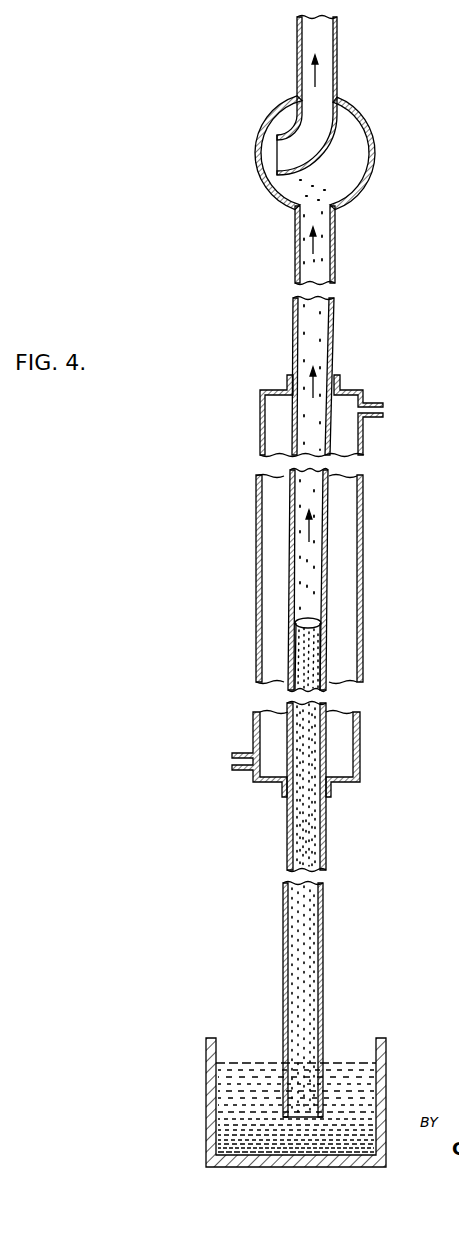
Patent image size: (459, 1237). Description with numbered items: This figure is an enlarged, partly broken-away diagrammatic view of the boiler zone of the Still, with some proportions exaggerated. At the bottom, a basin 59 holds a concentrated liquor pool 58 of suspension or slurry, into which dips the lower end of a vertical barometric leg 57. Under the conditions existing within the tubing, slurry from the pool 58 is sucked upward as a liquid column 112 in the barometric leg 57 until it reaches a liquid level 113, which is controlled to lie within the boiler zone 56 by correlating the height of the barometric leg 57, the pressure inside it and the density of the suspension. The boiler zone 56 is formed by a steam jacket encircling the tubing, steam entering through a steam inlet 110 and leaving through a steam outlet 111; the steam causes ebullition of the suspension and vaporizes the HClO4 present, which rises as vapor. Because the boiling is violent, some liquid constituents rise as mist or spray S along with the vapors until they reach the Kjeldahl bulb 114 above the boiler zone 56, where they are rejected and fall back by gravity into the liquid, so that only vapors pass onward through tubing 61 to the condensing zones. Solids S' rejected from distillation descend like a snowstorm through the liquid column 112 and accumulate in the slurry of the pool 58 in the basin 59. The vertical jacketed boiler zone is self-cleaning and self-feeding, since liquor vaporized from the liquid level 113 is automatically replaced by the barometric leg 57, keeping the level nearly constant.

The tubing section 61 is at (297, 54).
The Kjeldahl bulb 114 is at (375, 160).
The mist or spray S is at (292, 245).
The steam inlet 110 is at (383, 410).
The boiler zone 56 is at (363, 492).
The liquid level 113 is at (310, 623).
The steam outlet 111 is at (240, 752).
The liquid column 112 is at (305, 812).
The barometric leg 57 is at (326, 835).
The solids S' is at (270, 840).
The concentrated liquor pool 58 is at (257, 1063).
The basin 59 is at (206, 1083).